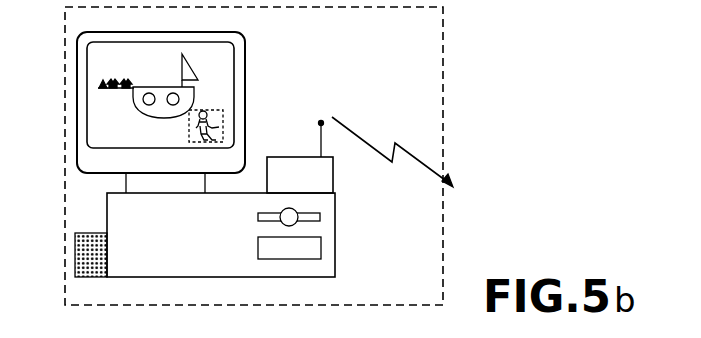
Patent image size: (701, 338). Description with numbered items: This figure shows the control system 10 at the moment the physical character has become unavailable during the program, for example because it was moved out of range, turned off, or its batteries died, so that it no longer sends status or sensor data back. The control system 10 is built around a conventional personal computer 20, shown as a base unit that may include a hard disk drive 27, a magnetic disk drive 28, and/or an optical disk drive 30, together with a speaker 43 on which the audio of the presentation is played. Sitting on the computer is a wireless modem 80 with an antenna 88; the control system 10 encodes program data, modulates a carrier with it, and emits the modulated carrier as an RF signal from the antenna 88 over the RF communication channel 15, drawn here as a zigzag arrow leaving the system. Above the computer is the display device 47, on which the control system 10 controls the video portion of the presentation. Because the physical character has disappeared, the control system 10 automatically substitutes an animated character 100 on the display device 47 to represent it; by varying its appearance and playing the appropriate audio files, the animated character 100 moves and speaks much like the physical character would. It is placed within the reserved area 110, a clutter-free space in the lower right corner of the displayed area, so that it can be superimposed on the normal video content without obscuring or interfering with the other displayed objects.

The control system 10 is at (413, 37).
The RF communication channel 15 is at (398, 146).
The personal computer 20 is at (141, 224).
The hard disk drive 27 is at (321, 258).
The magnetic disk drive 28 is at (342, 218).
The optical disk drive 30 is at (320, 222).
The speaker 43 is at (86, 277).
The display device 47 is at (246, 52).
The wireless modem 80 is at (285, 157).
The antenna 88 is at (321, 123).
The animated character 100 is at (191, 128).
The reserved area 110 is at (191, 128).